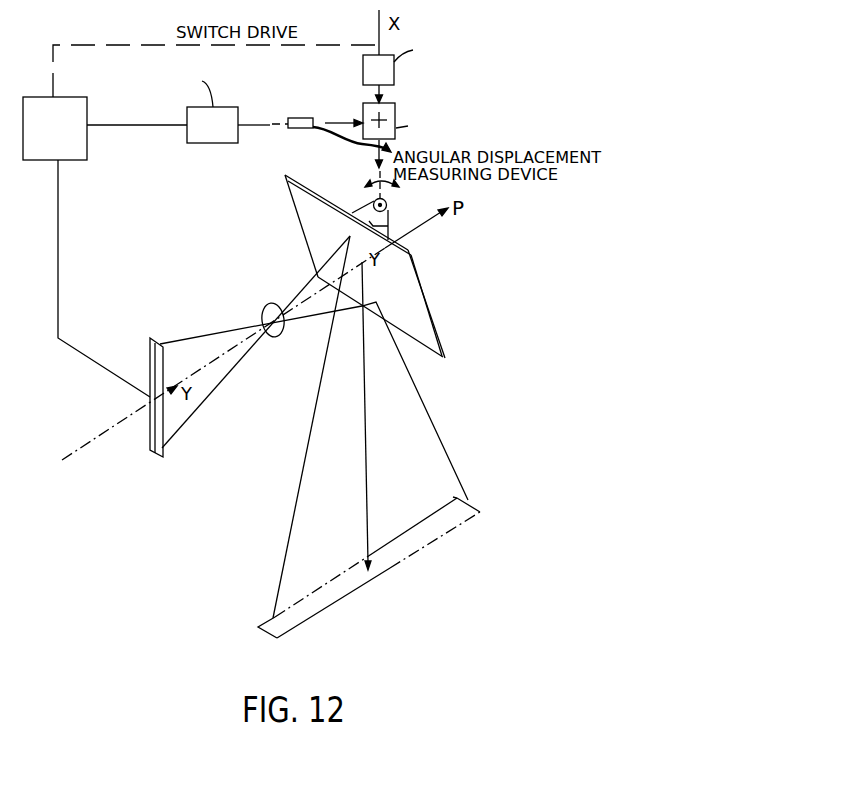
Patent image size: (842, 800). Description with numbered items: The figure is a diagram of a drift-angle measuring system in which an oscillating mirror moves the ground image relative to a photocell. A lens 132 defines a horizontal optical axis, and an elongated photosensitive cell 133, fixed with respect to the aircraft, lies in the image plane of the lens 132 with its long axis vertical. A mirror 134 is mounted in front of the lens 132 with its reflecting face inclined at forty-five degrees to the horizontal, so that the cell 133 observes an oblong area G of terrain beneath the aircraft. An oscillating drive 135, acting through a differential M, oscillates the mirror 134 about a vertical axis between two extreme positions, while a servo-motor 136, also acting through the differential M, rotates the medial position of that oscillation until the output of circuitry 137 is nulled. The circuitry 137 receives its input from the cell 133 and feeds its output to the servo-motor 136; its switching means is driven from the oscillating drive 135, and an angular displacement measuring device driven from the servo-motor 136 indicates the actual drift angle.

The lens 132 is at (283, 328).
The elongated photosensitive cell 133 is at (155, 425).
The mirror 134 is at (430, 298).
The oscillating drive 135 is at (395, 72).
The servo-motor 136 is at (228, 143).
The circuitry 137 is at (87, 143).
The differential M is at (397, 108).
The oblong area of terrain G is at (392, 557).